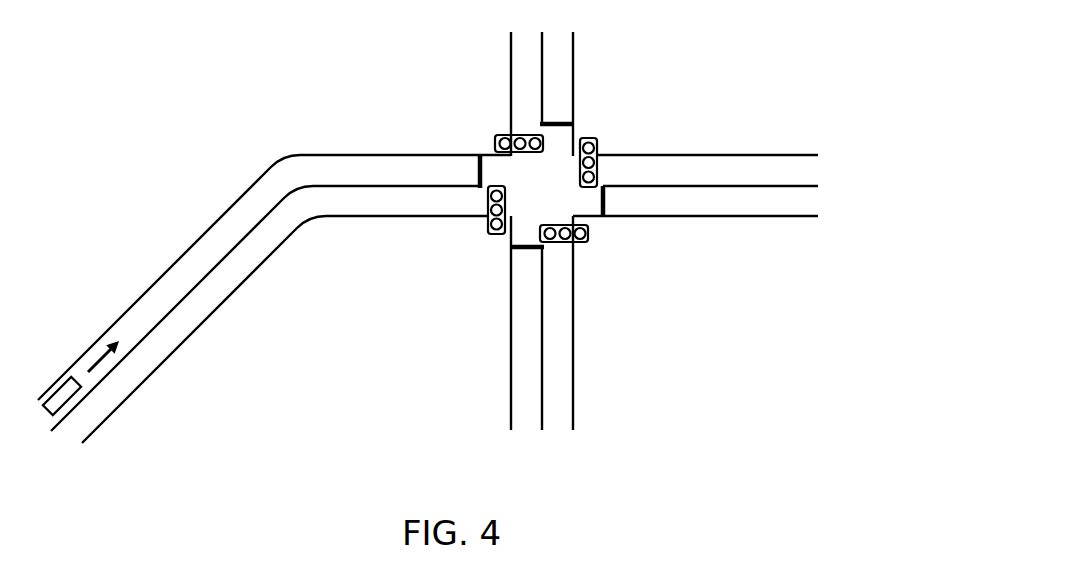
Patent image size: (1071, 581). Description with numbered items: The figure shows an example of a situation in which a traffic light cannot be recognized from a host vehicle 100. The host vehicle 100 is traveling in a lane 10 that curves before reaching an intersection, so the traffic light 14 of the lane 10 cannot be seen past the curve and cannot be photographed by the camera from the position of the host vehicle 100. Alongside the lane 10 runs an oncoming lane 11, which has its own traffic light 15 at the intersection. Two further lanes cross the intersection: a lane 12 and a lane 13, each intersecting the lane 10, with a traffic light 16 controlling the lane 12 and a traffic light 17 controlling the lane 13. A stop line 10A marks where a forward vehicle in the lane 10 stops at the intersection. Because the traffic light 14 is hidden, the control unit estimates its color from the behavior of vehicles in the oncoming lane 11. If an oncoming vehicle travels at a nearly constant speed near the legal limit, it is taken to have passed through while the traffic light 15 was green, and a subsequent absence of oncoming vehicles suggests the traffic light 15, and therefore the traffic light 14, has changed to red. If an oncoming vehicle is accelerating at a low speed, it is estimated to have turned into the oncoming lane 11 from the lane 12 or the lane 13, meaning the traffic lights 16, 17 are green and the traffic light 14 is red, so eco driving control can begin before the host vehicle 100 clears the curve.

The lane 10 is at (238, 213).
The stop line 10A is at (479, 153).
The oncoming lane 11 is at (260, 253).
The lane 12 is at (515, 375).
The lane 13 is at (567, 78).
The traffic light 14 is at (598, 142).
The traffic light 15 is at (495, 233).
The traffic light 16 is at (497, 135).
The traffic light 17 is at (575, 242).
The host vehicle 100 is at (52, 388).